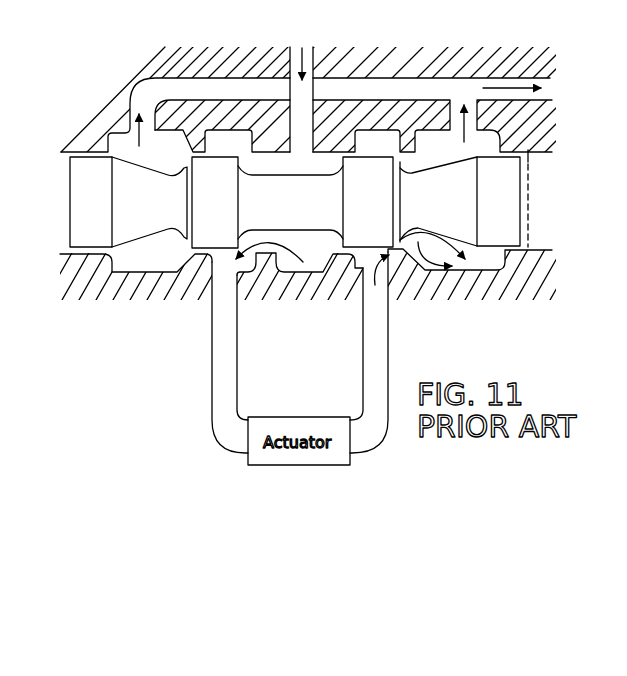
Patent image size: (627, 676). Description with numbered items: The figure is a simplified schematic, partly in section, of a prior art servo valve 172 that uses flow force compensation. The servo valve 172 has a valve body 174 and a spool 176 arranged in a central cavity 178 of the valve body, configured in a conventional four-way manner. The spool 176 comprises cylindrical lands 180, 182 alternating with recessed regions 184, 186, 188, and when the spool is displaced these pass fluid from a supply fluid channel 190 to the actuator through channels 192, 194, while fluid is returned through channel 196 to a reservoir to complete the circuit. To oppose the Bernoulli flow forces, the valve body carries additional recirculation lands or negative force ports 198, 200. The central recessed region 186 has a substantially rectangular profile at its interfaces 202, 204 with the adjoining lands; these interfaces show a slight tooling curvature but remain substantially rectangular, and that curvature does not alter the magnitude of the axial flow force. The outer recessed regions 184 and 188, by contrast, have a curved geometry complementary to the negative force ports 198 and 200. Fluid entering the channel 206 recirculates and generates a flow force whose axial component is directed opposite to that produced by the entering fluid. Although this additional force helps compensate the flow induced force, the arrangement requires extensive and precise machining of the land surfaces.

The servo valve 172 is at (110, 76).
The valve body 174 is at (530, 319).
The spool 176 is at (503, 200).
The central cavity 178 is at (543, 173).
The cylindrical land 180 is at (382, 210).
The cylindrical land 182 is at (231, 211).
The outer recessed region 184 is at (455, 218).
The recessed region 186 is at (297, 210).
The outer recessed region 188 is at (162, 211).
The supply fluid channel 190 is at (314, 84).
The channel 192 is at (389, 330).
The channel 194 is at (237, 333).
The return channel 196 is at (470, 75).
The negative force port 198 is at (426, 153).
The negative force port 200 is at (176, 265).
The interface 202 is at (255, 167).
The interface 204 is at (336, 233).
The channel 206 is at (420, 277).